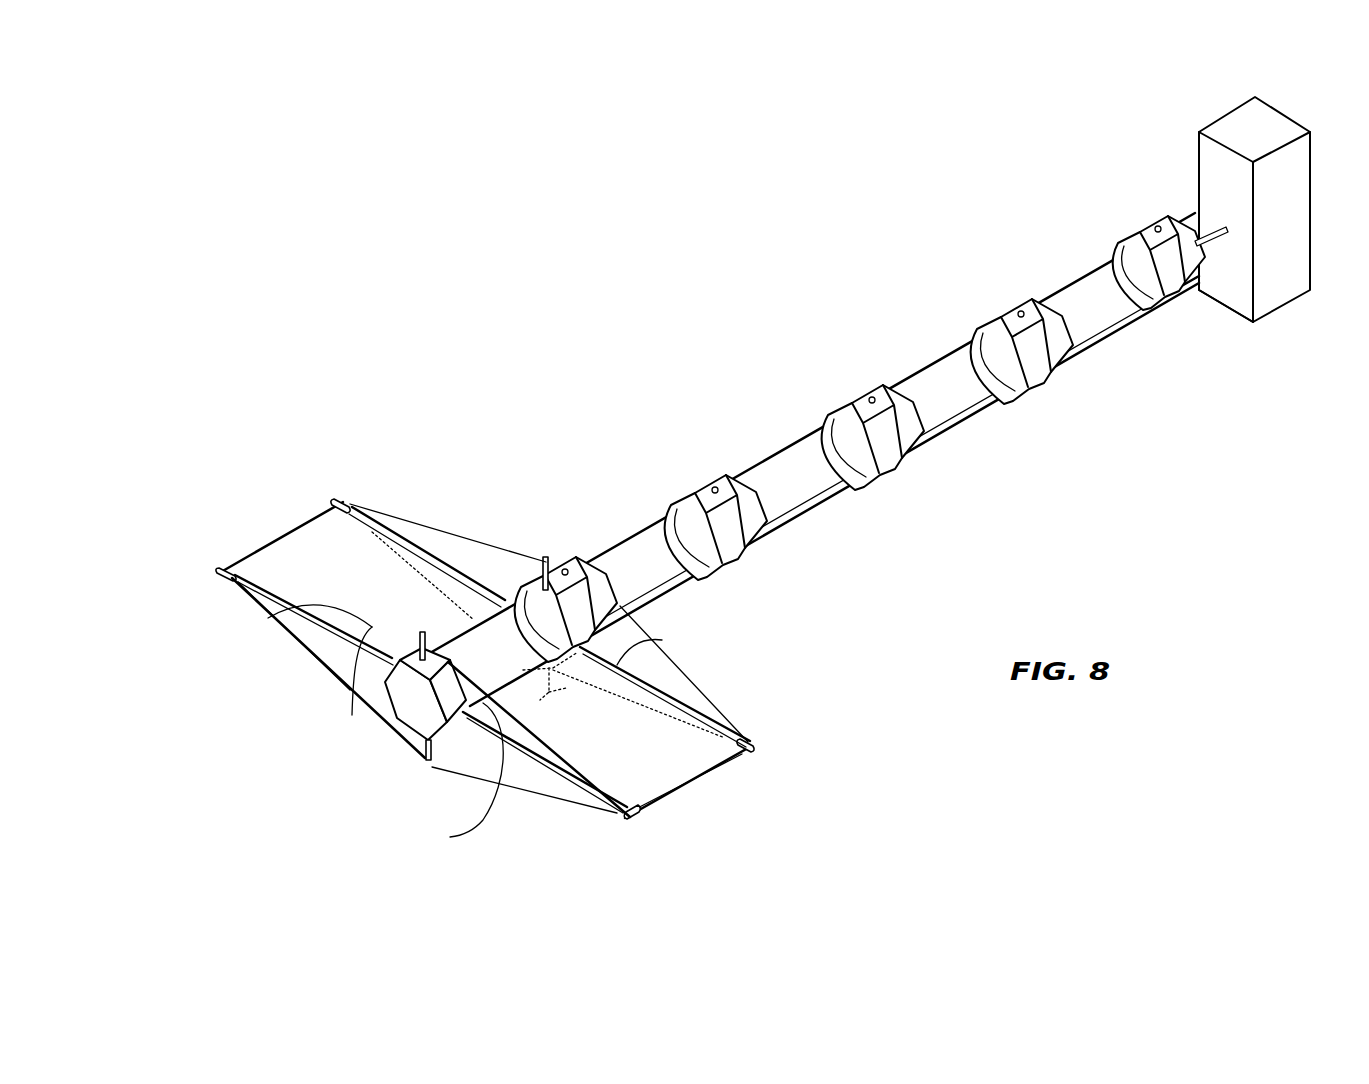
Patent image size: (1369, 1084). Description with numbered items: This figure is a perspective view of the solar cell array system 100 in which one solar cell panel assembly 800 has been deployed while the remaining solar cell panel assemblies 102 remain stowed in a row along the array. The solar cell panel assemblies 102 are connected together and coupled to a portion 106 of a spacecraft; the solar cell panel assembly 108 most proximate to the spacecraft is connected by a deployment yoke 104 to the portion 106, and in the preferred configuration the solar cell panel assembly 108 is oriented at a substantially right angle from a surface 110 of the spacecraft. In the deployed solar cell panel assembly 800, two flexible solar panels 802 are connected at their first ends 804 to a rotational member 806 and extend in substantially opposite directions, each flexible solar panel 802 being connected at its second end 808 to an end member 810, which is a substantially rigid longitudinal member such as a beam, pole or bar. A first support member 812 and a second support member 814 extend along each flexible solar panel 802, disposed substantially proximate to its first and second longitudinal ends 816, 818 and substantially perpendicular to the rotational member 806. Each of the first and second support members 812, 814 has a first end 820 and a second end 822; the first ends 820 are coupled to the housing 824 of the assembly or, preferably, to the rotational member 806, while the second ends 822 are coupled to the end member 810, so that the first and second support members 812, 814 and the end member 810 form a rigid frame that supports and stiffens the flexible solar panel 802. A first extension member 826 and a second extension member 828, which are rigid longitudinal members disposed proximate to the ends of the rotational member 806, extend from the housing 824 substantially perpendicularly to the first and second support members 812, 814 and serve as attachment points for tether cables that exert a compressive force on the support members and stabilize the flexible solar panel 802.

The solar cell array system 100 is at (843, 102).
The solar cell panel assembly 102 is at (1097, 347).
The deployment yoke 104 is at (1213, 227).
The portion of a spacecraft 106 is at (1280, 258).
The solar cell panel assembly most proximate to the spacecraft 108 is at (1133, 330).
The surface of the spacecraft 110 is at (1243, 287).
The deployed solar cell panel assembly 800 is at (604, 900).
The flexible solar panel 802 is at (312, 522).
The first end 804 is at (300, 614).
The rotational member 806 is at (1093, 283).
The second end 808 is at (263, 567).
The end member 810 is at (283, 527).
The first support member 812 is at (255, 590).
The second support member 814 is at (387, 527).
The first longitudinal end 816 is at (268, 612).
The second longitudinal end 818 is at (430, 555).
The first end 820 is at (493, 590).
The second end 822 is at (353, 508).
The housing 824 is at (1158, 225).
The first extension member 826 is at (545, 558).
The second extension member 828 is at (426, 760).